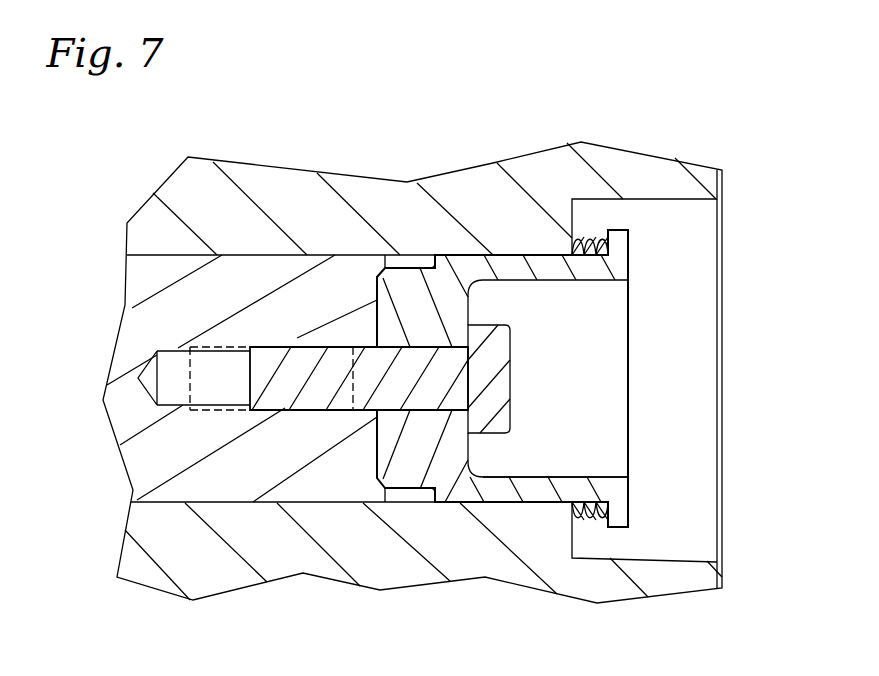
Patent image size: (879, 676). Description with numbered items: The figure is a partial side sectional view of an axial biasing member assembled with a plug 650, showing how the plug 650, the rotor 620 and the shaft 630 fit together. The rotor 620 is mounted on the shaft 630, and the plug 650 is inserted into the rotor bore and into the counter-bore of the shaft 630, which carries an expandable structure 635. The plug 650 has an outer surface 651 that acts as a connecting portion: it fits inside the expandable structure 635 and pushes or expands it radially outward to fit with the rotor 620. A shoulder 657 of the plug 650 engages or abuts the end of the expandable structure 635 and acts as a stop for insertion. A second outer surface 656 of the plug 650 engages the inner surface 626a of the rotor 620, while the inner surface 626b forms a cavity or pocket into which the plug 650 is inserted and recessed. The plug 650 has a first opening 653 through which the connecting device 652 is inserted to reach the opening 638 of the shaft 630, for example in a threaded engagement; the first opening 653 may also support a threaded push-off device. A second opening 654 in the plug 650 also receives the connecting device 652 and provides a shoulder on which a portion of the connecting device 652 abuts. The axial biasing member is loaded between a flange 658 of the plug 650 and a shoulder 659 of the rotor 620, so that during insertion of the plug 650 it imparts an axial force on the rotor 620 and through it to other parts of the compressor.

The rotor 620 is at (253, 172).
The shaft 630 is at (140, 283).
The opening of the shaft 638 is at (223, 390).
The outer surface 651 is at (403, 273).
The shoulder 657 is at (422, 280).
The outer surface 656 is at (493, 255).
The shoulder of the rotor 659 is at (618, 238).
The flange 658 is at (573, 220).
The plug 650 is at (628, 293).
The second opening 654 is at (603, 340).
The connecting device 652 is at (512, 405).
The inner surface 626b is at (657, 558).
The inner surface 626a is at (513, 487).
The expandable structure 635 is at (410, 497).
The first opening 653 is at (425, 390).